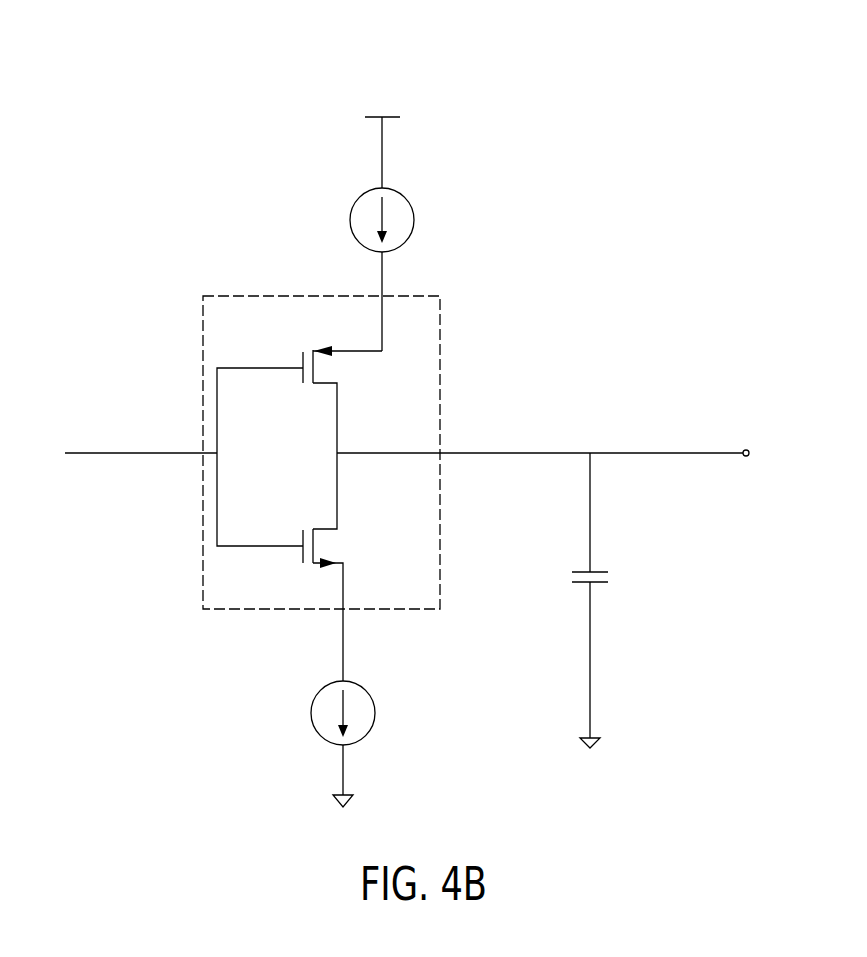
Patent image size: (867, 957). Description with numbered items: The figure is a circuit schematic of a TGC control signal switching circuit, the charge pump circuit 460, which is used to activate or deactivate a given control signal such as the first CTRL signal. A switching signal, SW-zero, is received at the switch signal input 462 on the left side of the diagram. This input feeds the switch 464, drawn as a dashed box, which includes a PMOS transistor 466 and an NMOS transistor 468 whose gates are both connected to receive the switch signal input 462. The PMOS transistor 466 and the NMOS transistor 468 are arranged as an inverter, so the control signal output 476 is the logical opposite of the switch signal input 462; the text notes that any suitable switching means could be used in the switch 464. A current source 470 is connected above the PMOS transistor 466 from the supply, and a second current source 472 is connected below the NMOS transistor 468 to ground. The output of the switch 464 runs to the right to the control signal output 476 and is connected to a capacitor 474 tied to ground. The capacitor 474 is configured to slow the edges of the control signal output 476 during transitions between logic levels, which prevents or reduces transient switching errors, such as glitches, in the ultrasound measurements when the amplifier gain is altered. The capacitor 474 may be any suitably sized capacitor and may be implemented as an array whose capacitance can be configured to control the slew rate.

The charge pump circuit 460 is at (128, 92).
The switch signal input 462 is at (85, 454).
The switch 464 is at (440, 311).
The PMOS transistor 466 is at (334, 365).
The NMOS transistor 468 is at (342, 545).
The current source 470 is at (412, 204).
The current source 472 is at (375, 698).
The capacitor 474 is at (600, 571).
The control signal output 476 is at (748, 458).